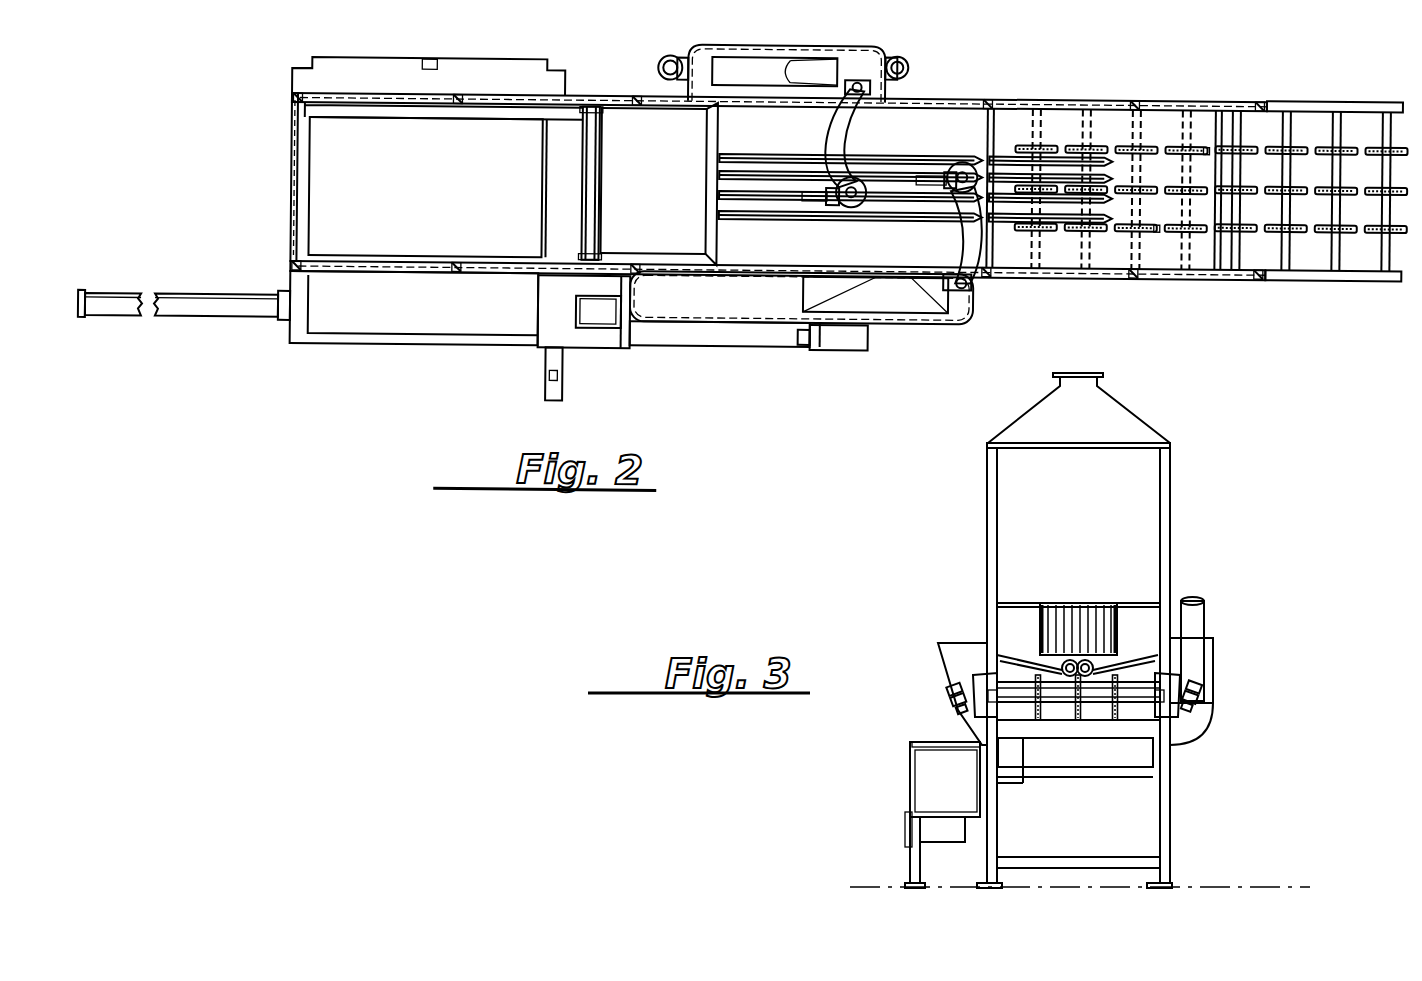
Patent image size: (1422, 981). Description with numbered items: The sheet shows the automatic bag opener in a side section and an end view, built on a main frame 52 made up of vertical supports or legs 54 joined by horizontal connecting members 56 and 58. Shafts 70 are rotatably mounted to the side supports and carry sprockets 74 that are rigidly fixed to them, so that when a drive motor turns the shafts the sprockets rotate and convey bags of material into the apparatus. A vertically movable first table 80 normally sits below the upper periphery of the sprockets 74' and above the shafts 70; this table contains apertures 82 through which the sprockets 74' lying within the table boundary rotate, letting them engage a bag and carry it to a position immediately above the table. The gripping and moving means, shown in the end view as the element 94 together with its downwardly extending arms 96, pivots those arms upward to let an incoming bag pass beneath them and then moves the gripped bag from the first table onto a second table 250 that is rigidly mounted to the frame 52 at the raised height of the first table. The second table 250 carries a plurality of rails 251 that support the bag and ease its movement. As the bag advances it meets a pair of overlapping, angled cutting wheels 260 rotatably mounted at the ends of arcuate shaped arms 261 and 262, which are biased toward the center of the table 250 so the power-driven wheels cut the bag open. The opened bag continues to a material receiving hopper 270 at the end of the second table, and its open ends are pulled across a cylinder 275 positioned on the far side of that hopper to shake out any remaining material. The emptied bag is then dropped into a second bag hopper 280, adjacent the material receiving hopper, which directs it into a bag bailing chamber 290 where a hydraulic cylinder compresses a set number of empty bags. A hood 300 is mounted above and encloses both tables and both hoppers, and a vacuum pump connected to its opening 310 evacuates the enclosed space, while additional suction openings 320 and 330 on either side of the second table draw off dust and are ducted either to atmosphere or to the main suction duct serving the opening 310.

In FIG. 3, the main frame 52 is at (1200, 832).
In FIG. 3, the vertical supports 54 is at (1166, 797).
In FIG. 2, the horizontal connecting members 56 is at (1302, 91).
In FIG. 2, the horizontal connecting members 58 is at (292, 203).
In FIG. 3, the horizontal connecting members 58 is at (1078, 860).
In FIG. 2, the shafts 70 is at (1284, 252).
In FIG. 3, the shafts 70 is at (1140, 703).
In FIG. 2, the sprockets 74 is at (1312, 136).
In FIG. 3, the sprockets 74 is at (1078, 719).
In FIG. 2, the sprockets 74' is at (1118, 192).
In FIG. 2, the first table 80 is at (1214, 246).
In FIG. 2, the apertures 82 is at (1208, 138).
In FIG. 3, the grate 94 is at (1034, 620).
In FIG. 3, the downwardly extending arms 96 is at (1116, 618).
In FIG. 2, the second table 250 is at (946, 111).
In FIG. 2, the rails 251 is at (876, 151).
In FIG. 3, the rails 251 is at (1064, 661).
In FIG. 2, the cutting wheels 260 is at (960, 163).
In FIG. 2, the arcuate shaped arm 261 is at (955, 233).
In FIG. 3, the arcuate shaped arm 261 is at (1012, 660).
In FIG. 2, the arcuate shaped arm 262 is at (830, 125).
In FIG. 3, the arcuate shaped arm 262 is at (1162, 650).
In FIG. 2, the material receiving hopper 270 is at (659, 183).
In FIG. 2, the cylinder 275 is at (583, 206).
In FIG. 2, the second bag hopper 280 is at (427, 187).
In FIG. 2, the bag bailing chamber 290 is at (305, 335).
In FIG. 3, the bag bailing chamber 290 is at (910, 784).
In FIG. 3, the hood 300 is at (1202, 424).
In FIG. 3, the opening 310 is at (1102, 379).
In FIG. 2, the suction opening 320 is at (828, 62).
In FIG. 2, the suction opening 330 is at (893, 312).
In FIG. 3, the suction opening 330 is at (950, 682).